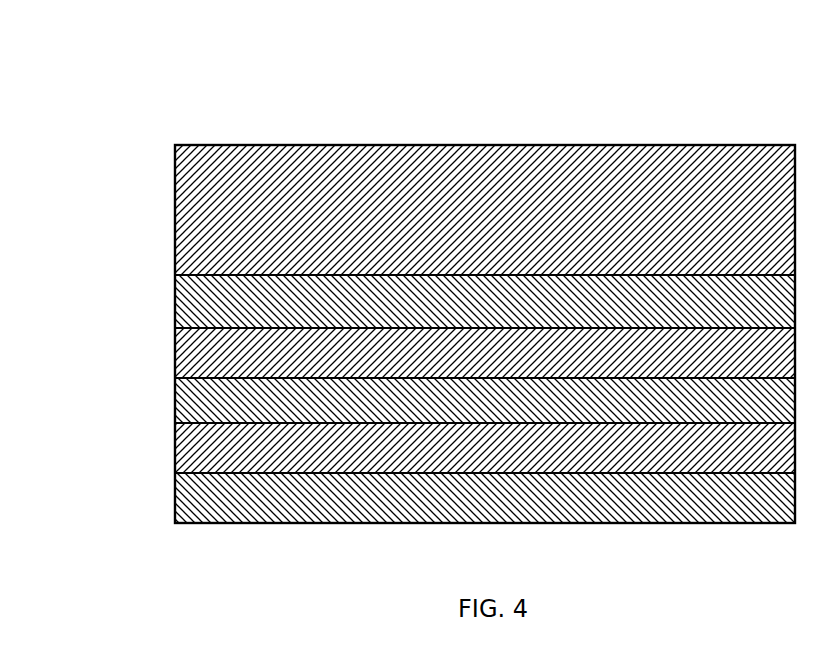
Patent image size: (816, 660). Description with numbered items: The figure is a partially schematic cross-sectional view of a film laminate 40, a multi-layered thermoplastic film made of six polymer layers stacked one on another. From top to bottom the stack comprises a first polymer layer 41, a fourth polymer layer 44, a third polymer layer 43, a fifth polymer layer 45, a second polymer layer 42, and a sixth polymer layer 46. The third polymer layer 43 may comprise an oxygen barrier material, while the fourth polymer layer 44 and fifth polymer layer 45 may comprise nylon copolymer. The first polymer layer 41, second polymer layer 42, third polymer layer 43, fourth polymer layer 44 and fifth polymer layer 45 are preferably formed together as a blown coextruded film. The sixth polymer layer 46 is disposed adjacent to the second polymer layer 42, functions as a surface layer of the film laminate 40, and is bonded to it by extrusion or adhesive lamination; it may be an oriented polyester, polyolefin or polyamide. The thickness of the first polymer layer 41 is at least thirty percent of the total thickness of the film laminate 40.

The film laminate 40 is at (500, 127).
The first polymer layer 41 is at (175, 255).
The second polymer layer 42 is at (175, 455).
The third polymer layer 43 is at (175, 360).
The fourth polymer layer 44 is at (175, 306).
The fifth polymer layer 45 is at (175, 405).
The sixth polymer layer 46 is at (175, 494).